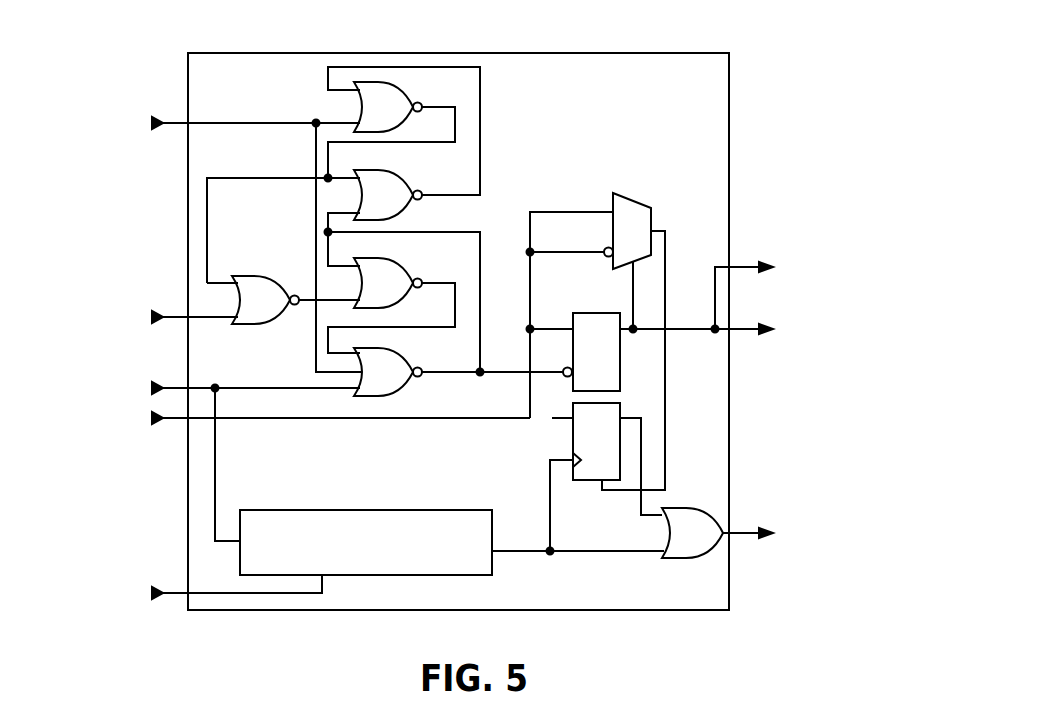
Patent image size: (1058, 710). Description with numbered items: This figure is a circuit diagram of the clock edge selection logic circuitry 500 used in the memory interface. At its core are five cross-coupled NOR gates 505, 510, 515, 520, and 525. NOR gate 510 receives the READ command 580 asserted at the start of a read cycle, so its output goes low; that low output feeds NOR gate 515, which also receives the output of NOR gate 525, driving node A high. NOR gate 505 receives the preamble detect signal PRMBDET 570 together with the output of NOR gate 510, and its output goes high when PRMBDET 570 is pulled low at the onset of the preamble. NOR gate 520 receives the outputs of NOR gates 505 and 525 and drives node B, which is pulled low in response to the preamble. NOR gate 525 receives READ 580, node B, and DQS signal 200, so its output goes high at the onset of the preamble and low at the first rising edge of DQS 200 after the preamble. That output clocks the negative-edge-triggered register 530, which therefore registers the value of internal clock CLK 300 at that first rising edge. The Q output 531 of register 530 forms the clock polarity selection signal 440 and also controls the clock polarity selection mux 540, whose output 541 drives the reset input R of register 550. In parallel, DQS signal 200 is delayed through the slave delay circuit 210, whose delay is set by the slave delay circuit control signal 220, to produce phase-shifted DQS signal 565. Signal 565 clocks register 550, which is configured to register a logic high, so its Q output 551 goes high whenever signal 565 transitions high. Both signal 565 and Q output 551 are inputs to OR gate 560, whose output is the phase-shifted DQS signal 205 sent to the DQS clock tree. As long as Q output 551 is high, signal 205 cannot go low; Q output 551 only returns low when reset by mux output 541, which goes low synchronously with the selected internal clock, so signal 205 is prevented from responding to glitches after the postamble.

The clock edge selection logic circuitry 500 is at (685, 52).
The NOR gate 505 is at (250, 276).
The NOR gate 510 is at (408, 94).
The NOR gate 515 is at (398, 172).
The NOR gate 520 is at (398, 260).
The NOR gate 525 is at (408, 352).
The negative-edge-triggered register 530 is at (590, 312).
The Q output 531 is at (640, 286).
The clock polarity selection mux 540 is at (634, 197).
The output 541 is at (592, 250).
The register 550 is at (570, 435).
The Q output 551 is at (643, 463).
The OR gate 560 is at (717, 518).
The phase-shifted DQS signal 565 is at (580, 552).
The preamble detect signal (PRMBDET) 570 is at (172, 316).
The READ command 580 is at (174, 122).
The DQS signal 200 is at (173, 386).
The phase-shifted DQS signal 205 is at (740, 530).
The slave delay circuit 210 is at (405, 508).
The slave delay circuit control signal 220 is at (182, 590).
The internal clock CLK 300 is at (172, 421).
The clock polarity selection signal 440 is at (741, 328).